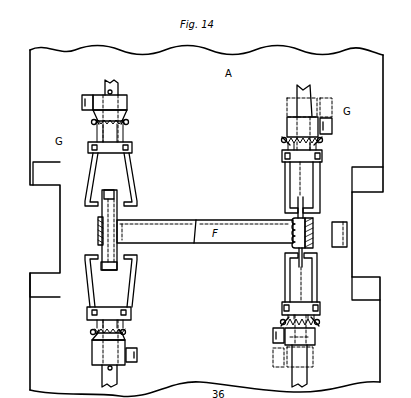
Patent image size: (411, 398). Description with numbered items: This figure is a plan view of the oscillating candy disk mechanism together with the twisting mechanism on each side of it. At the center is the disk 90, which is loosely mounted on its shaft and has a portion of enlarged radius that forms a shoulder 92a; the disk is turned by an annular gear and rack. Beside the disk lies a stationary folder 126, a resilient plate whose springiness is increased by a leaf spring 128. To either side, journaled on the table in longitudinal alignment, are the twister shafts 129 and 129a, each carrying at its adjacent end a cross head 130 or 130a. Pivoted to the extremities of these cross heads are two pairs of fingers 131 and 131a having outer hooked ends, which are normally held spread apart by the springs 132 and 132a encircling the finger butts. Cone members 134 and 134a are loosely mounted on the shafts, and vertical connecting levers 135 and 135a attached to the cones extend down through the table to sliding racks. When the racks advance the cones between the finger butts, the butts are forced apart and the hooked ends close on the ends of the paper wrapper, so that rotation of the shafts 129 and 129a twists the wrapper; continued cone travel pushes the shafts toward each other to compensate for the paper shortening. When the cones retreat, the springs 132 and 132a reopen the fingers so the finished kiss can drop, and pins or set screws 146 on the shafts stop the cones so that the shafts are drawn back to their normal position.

The disk 90 is at (196, 244).
The shoulder 92a is at (198, 222).
The stationary folder 126 is at (337, 248).
The leaf spring 128 is at (313, 223).
The shaft 129 is at (118, 379).
The shaft 129a is at (119, 89).
The cross head 130 is at (99, 306).
The cross head 130a is at (99, 155).
The finger 131 is at (88, 283).
The finger 131a is at (88, 173).
The spring 132 is at (126, 333).
The spring 132a is at (128, 122).
The cone member 134 is at (92, 350).
The cone member 134a is at (95, 112).
The connecting lever 135 is at (137, 358).
The connecting lever 135a is at (82, 100).
The pin or set screw 146 is at (104, 89).